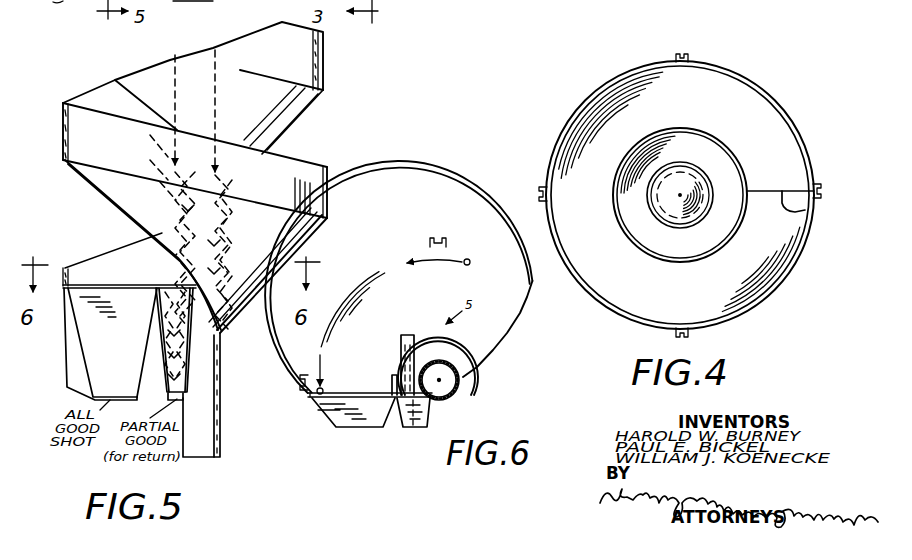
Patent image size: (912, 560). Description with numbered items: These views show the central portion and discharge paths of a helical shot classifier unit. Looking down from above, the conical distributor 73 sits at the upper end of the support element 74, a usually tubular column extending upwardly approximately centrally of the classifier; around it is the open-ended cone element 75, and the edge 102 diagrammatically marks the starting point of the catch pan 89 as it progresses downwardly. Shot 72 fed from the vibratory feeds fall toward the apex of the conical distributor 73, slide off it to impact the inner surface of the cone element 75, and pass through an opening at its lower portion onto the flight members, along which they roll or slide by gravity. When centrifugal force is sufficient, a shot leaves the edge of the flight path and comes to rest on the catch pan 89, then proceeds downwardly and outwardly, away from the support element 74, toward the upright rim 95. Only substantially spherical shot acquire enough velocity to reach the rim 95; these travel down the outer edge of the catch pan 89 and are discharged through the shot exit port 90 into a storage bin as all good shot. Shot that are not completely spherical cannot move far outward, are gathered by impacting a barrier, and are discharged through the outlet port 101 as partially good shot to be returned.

In FIG. 6, the shot 72 is at (310, 395).
In FIG. 4, the conical distributor 73 is at (697, 178).
In FIG. 5, the support element 74 is at (215, 413).
In FIG. 6, the support element 74 is at (460, 388).
In FIG. 4, the support element 74 is at (660, 218).
In FIG. 4, the open-ended cone element 75 is at (622, 208).
In FIG. 5, the catch pan 89 is at (303, 117).
In FIG. 5, the shot exit port 90 is at (80, 340).
In FIG. 6, the shot exit port 90 is at (350, 428).
In FIG. 5, the upright rim 95 is at (63, 139).
In FIG. 5, the outlet port 101 is at (188, 384).
In FIG. 6, the outlet port 101 is at (408, 331).
In FIG. 4, the edge 102 is at (800, 212).